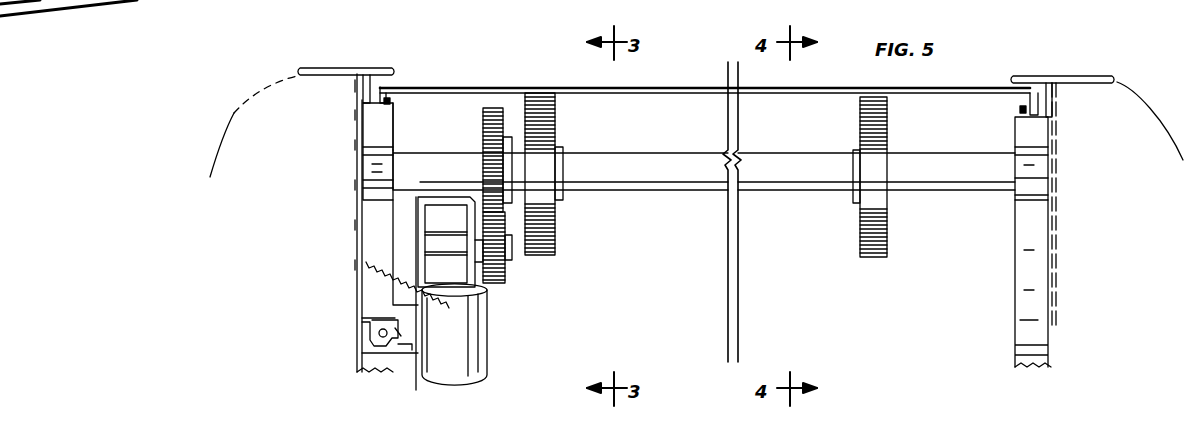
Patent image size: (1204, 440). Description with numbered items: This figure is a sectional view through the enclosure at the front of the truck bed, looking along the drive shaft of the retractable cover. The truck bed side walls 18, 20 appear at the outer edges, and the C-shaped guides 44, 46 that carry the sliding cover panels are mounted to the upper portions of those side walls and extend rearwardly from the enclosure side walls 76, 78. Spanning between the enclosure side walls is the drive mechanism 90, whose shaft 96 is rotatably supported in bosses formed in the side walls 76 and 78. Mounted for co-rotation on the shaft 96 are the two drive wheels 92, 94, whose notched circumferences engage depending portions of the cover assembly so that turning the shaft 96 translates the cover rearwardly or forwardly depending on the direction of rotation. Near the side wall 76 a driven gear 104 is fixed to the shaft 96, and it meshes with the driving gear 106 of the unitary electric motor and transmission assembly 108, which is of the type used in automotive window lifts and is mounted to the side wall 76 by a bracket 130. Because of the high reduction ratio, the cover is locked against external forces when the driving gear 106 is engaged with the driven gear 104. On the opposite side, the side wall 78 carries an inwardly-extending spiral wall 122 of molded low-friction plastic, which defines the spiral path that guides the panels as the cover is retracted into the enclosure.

The side wall 18 is at (1145, 102).
The side wall 20 is at (232, 132).
The guide 44 is at (334, 68).
The guide 46 is at (1080, 77).
The side wall 76 is at (357, 208).
The side wall 78 is at (1057, 330).
The drive mechanism 90 is at (570, 236).
The drive wheel 92 is at (548, 112).
The drive wheel 94 is at (866, 114).
The shaft 96 is at (432, 158).
The driven gear 104 is at (493, 108).
The driving gear 106 is at (500, 280).
The electric motor and transmission assembly 108 is at (484, 348).
The spiral wall 122 is at (1015, 278).
The bracket 130 is at (372, 336).